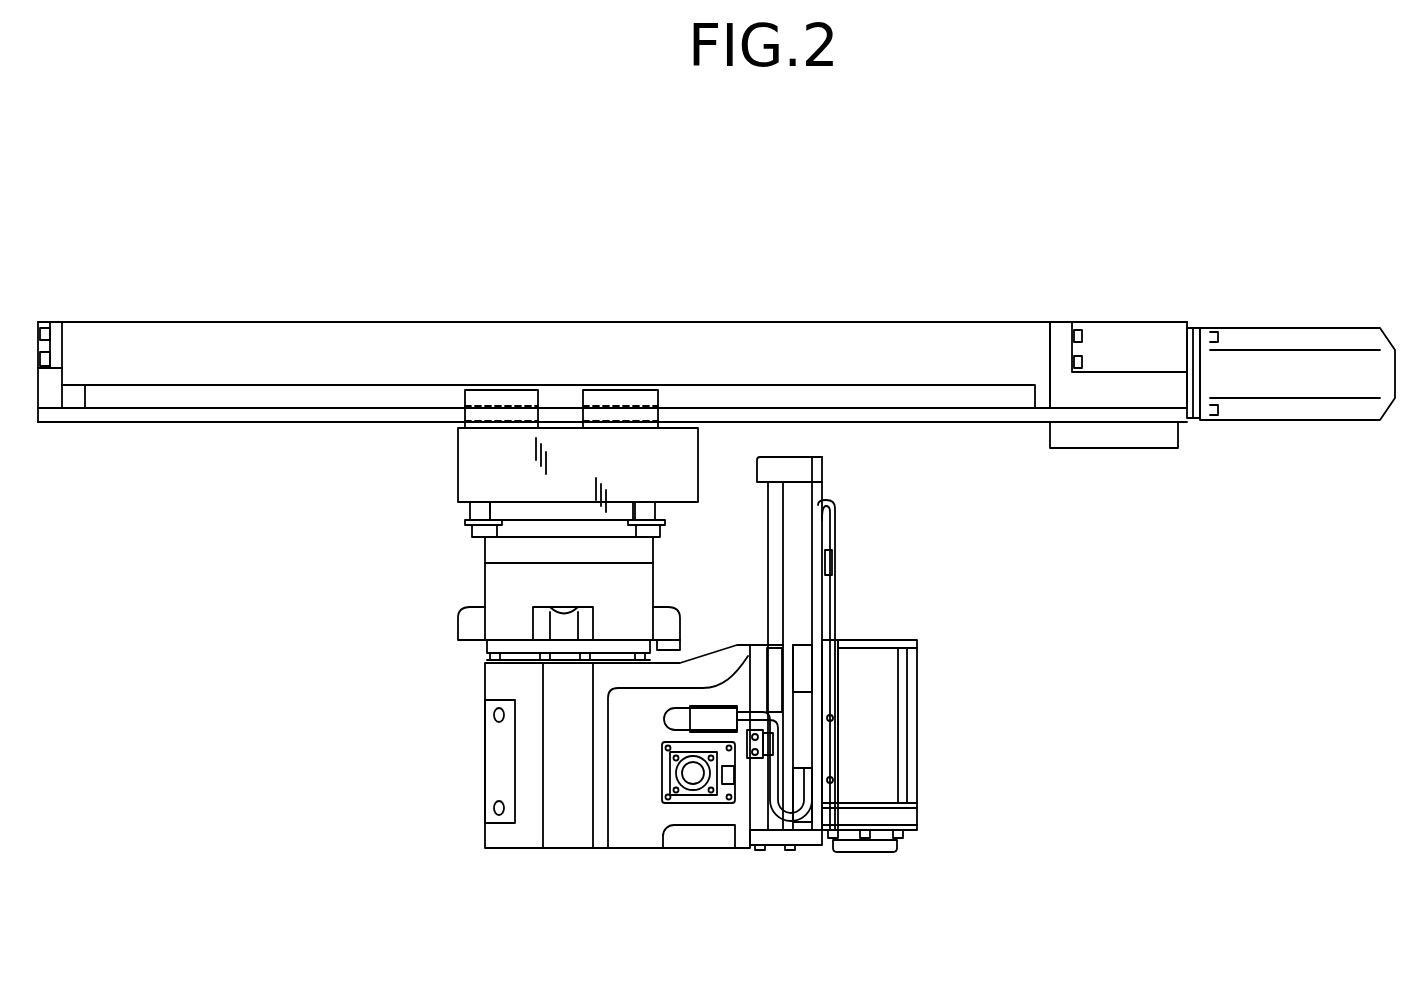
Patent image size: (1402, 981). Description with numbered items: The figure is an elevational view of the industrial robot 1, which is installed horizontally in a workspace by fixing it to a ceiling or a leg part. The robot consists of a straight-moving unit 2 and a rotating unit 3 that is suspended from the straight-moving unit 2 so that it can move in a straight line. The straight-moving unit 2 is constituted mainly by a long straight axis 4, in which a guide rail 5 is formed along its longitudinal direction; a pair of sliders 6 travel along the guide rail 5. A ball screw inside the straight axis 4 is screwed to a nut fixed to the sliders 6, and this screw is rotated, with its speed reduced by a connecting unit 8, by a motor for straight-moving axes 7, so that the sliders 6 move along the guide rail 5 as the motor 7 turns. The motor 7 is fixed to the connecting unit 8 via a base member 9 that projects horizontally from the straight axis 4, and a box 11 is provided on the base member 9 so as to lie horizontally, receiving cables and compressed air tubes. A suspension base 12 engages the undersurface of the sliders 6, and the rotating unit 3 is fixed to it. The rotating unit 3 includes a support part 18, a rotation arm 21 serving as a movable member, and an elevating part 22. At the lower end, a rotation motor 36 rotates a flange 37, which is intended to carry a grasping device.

The industrial robot 1 is at (750, 228).
The straight-moving unit 2 is at (931, 306).
The rotating unit 3 is at (420, 654).
The straight axis 4 is at (324, 320).
The guide rail 5 is at (308, 408).
The sliders 6 is at (500, 390).
The motor for straight-moving axes 7 is at (1297, 328).
The connecting unit 8 is at (1125, 322).
The base member 9 is at (1192, 328).
The box 11 is at (1110, 448).
The suspension base 12 is at (458, 470).
The support part 18 is at (485, 580).
The rotation arm 21 is at (485, 770).
The elevating part 22 is at (874, 590).
The rotation motor 36 is at (917, 717).
The flange 37 is at (862, 852).